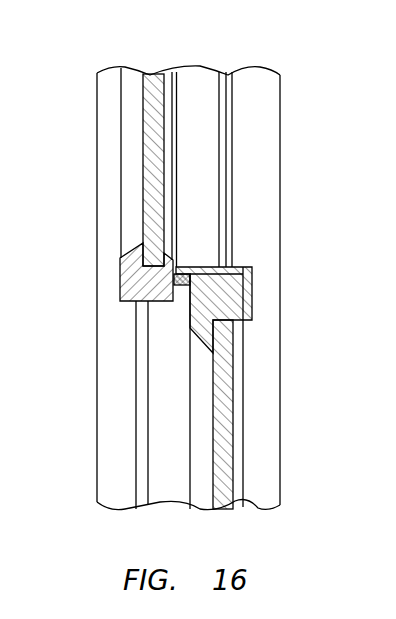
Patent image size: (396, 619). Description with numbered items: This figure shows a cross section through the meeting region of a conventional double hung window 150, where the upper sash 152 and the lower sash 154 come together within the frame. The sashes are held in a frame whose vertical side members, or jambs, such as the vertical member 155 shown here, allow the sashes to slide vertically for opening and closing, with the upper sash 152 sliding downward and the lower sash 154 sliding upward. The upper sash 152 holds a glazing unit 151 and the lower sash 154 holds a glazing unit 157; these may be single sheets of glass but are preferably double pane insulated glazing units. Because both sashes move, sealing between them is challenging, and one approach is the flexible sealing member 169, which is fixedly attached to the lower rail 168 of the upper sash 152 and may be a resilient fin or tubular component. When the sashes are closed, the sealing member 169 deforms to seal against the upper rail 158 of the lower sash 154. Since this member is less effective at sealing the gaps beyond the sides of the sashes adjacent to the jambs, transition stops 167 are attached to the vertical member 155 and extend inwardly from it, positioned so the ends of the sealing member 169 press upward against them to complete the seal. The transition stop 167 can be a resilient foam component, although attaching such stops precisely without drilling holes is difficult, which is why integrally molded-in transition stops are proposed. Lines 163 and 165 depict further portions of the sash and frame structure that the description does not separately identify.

The double hung window 150 is at (262, 55).
The glazing unit 151 is at (143, 205).
The upper sash 152 is at (121, 150).
The lower sash 154 is at (243, 425).
The vertical side member (jamb) 155 is at (280, 180).
The glazing unit 157 is at (225, 397).
The upper rail 158 is at (228, 300).
The inner tube 163 is at (227, 150).
The distal inner tube 165 is at (135, 443).
The transition stop 167 is at (183, 268).
The lower rail 168 is at (138, 273).
The flexible sealing member 169 is at (188, 297).